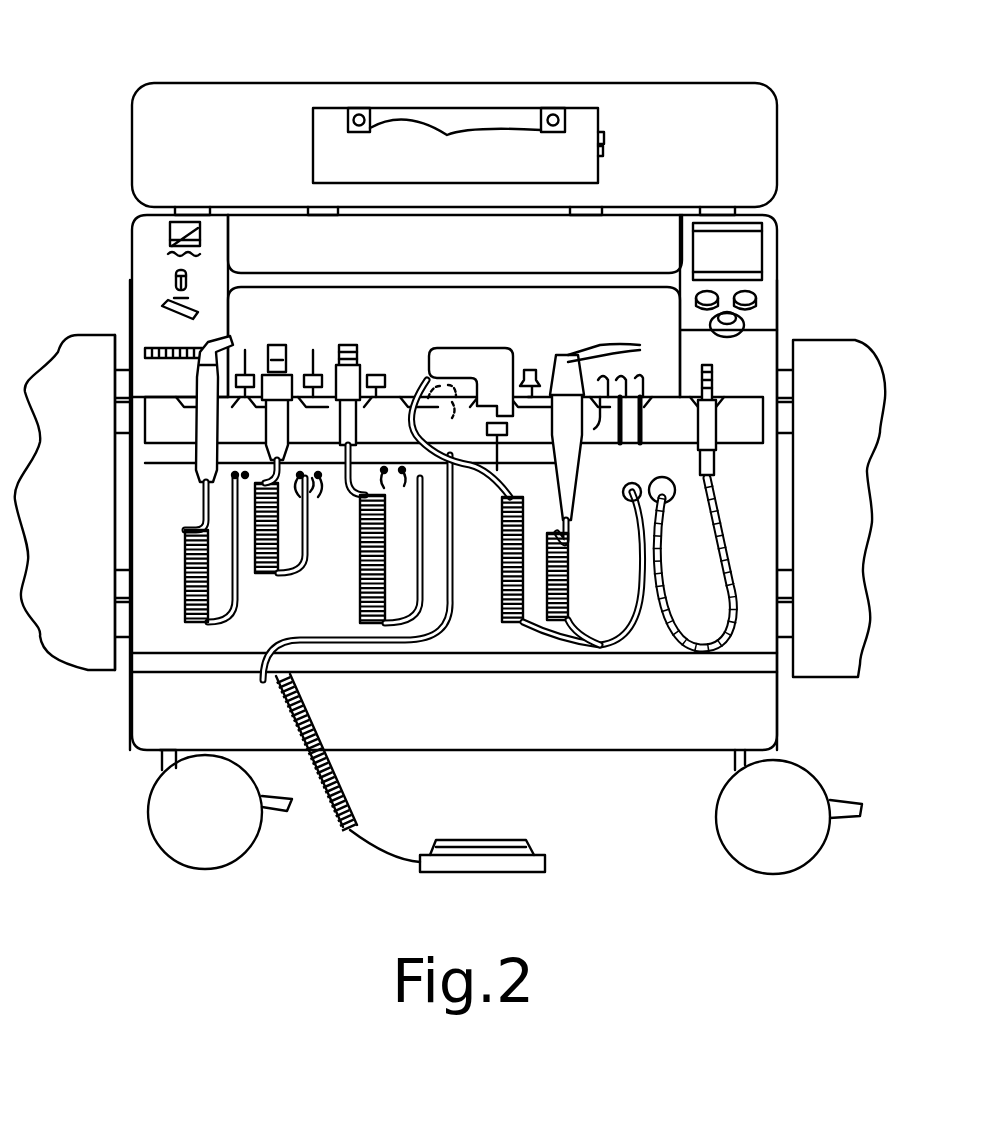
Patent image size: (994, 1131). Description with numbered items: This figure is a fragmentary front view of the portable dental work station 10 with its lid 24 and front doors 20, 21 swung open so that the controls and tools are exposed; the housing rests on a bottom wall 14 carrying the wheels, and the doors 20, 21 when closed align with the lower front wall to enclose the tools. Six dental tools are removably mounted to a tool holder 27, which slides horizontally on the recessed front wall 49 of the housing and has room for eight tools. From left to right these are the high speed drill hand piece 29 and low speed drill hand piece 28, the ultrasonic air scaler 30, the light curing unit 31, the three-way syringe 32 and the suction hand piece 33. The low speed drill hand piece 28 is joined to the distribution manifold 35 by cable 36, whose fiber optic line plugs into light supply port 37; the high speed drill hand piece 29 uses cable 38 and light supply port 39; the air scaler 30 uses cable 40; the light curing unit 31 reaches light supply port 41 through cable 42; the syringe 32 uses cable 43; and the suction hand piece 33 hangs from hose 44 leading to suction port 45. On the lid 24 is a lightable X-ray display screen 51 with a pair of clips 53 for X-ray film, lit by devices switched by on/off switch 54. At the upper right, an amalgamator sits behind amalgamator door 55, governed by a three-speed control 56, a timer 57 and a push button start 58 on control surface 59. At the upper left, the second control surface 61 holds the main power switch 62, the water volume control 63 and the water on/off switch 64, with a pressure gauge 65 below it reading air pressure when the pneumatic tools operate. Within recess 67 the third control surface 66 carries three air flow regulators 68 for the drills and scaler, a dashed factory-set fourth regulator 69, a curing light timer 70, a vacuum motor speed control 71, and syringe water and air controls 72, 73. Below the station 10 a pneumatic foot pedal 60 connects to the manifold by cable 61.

The portable dental work station 10 is at (231, 70).
The bottom wall 14 is at (472, 752).
The door 20 is at (68, 632).
The door 21 is at (815, 672).
The lid 24 is at (150, 97).
The tool holder 27 is at (760, 412).
The low speed drill hand piece 28 is at (285, 345).
The high speed drill hand piece 29 is at (198, 386).
The ultrasonic air scaler 30 is at (355, 360).
The light curing unit 31 is at (468, 348).
The three-way syringe 32 is at (572, 356).
The suction hand piece 33 is at (712, 372).
The distribution manifold 35 is at (414, 462).
The cable 36 is at (306, 560).
The light supply port 37 is at (314, 486).
The cable 38 is at (200, 502).
The light supply port 39 is at (215, 480).
The cable 40 is at (420, 556).
The light supply port 41 is at (623, 492).
The cable 42 is at (560, 645).
The cable 43 is at (560, 530).
The hose 44 is at (692, 640).
The suction port 45 is at (668, 500).
The recessed front wall 49 is at (585, 650).
The lightable X-ray display screen 51 is at (428, 130).
The clips 53 is at (430, 135).
The on/off switch 54 is at (606, 150).
The amalgamator door 55 is at (738, 242).
The three-speed control 56 is at (718, 300).
The timer 57 is at (756, 300).
The push button start 58 is at (712, 325).
The control surface 59 is at (690, 250).
The foot pedal 60 is at (515, 862).
The cable / second control surface 61 is at (140, 260).
The main power switch 62 is at (178, 226).
The water volume control 63 is at (190, 274).
The water on/off switch 64 is at (162, 308).
The pressure gauge 65 is at (145, 352).
The third control surface 66 is at (598, 400).
The recess 67 is at (261, 318).
The air flow regulators 68 is at (420, 330).
The fourth regulator 69 is at (455, 402).
The curing light timer 70 is at (532, 370).
The vacuum motor speed control 71 is at (592, 415).
The water volume control 72 is at (618, 440).
The air volume control 73 is at (642, 440).